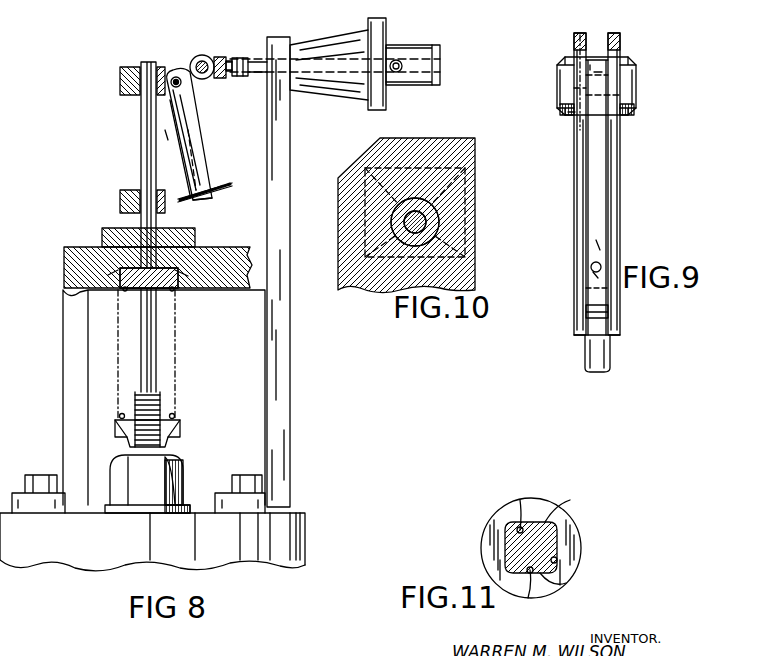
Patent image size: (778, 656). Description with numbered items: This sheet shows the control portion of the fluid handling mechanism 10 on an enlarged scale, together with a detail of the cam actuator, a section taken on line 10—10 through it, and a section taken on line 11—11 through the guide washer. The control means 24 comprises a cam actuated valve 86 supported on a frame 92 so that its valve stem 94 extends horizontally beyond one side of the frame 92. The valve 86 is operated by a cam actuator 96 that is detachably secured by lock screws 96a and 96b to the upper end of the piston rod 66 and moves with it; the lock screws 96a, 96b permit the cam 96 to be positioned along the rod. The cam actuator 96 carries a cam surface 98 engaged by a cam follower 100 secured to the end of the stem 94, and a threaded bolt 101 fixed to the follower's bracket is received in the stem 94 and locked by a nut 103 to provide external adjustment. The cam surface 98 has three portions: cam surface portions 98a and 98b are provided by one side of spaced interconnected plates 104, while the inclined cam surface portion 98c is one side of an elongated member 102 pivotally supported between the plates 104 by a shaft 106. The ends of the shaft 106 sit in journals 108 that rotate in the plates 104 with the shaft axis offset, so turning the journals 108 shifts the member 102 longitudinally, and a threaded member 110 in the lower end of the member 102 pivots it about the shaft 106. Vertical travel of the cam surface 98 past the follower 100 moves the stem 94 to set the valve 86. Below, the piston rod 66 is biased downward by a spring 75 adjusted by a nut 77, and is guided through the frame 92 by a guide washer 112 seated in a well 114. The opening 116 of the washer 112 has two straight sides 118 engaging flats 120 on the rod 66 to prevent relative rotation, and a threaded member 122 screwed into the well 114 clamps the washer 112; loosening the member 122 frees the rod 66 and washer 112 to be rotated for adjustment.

In FIG. 9, the fluid handling mechanism 10 is at (560, 31).
In FIG. 8, the section line 11— 11 is at (188, 270).
In FIG. 8, the control means 24 is at (235, 40).
In FIG. 8, the piston rod 66 is at (141, 168).
In FIG. 11, the piston rod 66 is at (505, 542).
In FIG. 8, the spring 75 is at (178, 314).
In FIG. 8, the nut 77 is at (181, 428).
In FIG. 8, the cam actuated valve 86 is at (364, 34).
In FIG. 8, the frame 92 is at (268, 320).
In FIG. 8, the valve stem 94 is at (240, 52).
In FIG. 8, the cam actuator 96 is at (216, 143).
In FIG. 8, the lock screw 96a is at (120, 80).
In FIG. 8, the lock screw 96b is at (120, 200).
In FIG. 8, the cam surface 98 is at (200, 95).
In FIG. 8, the cam surface portion 98a is at (188, 60).
In FIG. 9, the cam surface portion 98a is at (618, 34).
In FIG. 10, the cam surface portion 98a is at (370, 152).
In FIG. 8, the cam surface portion 98b is at (205, 110).
In FIG. 9, the cam surface portion 98b is at (574, 150).
In FIG. 8, the cam surface portion 98c is at (205, 165).
In FIG. 9, the cam surface portion 98c is at (600, 233).
In FIG. 8, the cam follower 100 is at (212, 80).
In FIG. 8, the threaded bolt 101 is at (203, 56).
In FIG. 8, the elongated member 102 is at (208, 204).
In FIG. 9, the elongated member 102 is at (598, 185).
In FIG. 8, the nut 103 is at (233, 71).
In FIG. 9, the plates 104 is at (618, 214).
In FIG. 10, the plates 104 is at (452, 140).
In FIG. 9, the shaft 106 is at (636, 88).
In FIG. 10, the shaft 106 is at (426, 216).
In FIG. 9, the journals 108 is at (565, 85).
In FIG. 10, the journals 108 is at (440, 190).
In FIG. 8, the threaded member 110 is at (232, 184).
In FIG. 9, the threaded member 110 is at (591, 270).
In FIG. 8, the guide washer 112 is at (122, 286).
In FIG. 11, the guide washer 112 is at (570, 534).
In FIG. 8, the well 114 is at (180, 256).
In FIG. 11, the opening 116 is at (557, 560).
In FIG. 11, the straight sides 118 is at (520, 500).
In FIG. 11, the flats 120 is at (570, 500).
In FIG. 8, the threaded member 122 is at (196, 238).